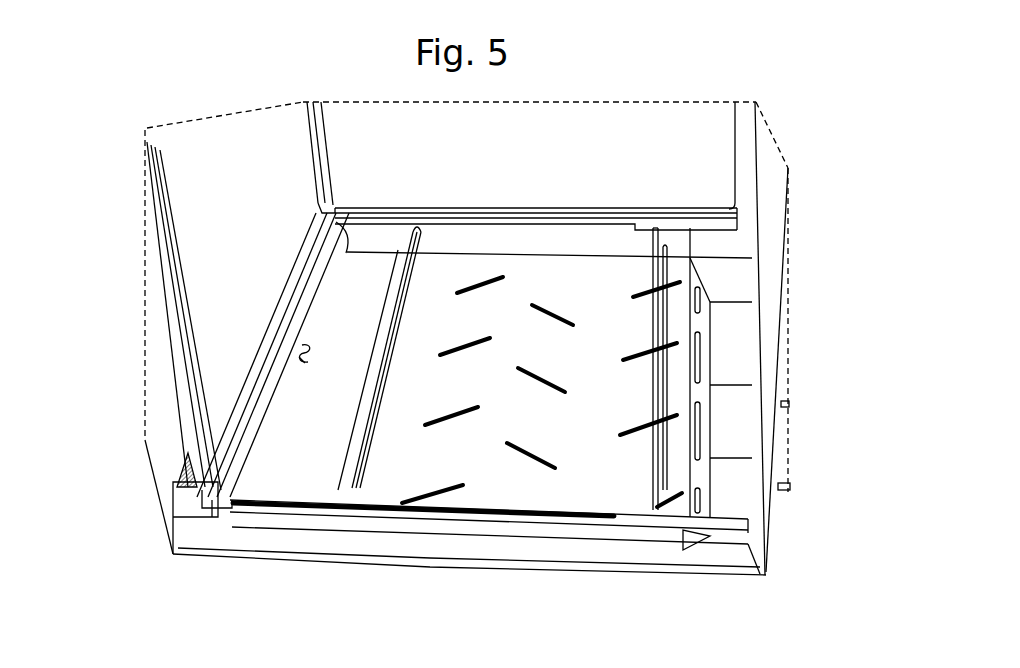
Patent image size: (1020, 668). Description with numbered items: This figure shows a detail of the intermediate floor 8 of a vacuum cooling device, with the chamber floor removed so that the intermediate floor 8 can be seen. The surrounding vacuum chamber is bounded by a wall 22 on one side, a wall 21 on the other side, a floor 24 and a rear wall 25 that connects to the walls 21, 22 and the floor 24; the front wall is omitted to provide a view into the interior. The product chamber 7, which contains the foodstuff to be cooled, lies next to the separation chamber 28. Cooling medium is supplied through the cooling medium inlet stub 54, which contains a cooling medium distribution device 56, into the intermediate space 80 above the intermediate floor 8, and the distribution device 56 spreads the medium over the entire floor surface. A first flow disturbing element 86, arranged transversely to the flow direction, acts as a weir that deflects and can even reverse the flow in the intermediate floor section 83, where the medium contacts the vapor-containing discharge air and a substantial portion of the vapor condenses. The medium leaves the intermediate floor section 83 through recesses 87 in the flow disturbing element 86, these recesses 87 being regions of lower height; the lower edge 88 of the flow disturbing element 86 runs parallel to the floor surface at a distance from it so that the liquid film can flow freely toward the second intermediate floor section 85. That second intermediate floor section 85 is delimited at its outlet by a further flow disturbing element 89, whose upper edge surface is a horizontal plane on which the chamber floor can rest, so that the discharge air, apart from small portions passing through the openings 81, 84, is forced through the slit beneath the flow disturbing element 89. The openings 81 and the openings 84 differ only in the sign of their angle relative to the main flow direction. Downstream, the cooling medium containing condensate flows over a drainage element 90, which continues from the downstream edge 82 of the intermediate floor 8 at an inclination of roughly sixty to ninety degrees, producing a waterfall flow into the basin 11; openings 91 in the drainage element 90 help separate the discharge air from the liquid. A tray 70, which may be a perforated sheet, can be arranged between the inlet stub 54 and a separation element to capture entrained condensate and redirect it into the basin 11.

The product chamber 7 is at (692, 168).
The intermediate floor 8 is at (390, 472).
The basin 11 is at (733, 472).
The wall 21 is at (767, 227).
The wall 22 is at (253, 257).
The floor 24 is at (630, 542).
The rear wall 25 is at (568, 160).
The separation chamber 28 is at (163, 428).
The cooling medium inlet stub 54 is at (303, 355).
The cooling medium distribution device 56 is at (302, 350).
The tray 70 is at (177, 482).
The intermediate space 80 is at (608, 245).
The openings 81 is at (533, 460).
The downstream edge 82 is at (690, 362).
The intermediate floor section 83 is at (358, 275).
The openings 84 is at (440, 420).
The second intermediate floor section 85 is at (523, 422).
The first flow disturbing element 86 is at (367, 418).
The recesses 87 is at (340, 462).
The lower edge 88 is at (417, 237).
The further flow disturbing element 89 is at (650, 443).
The drainage element 90 is at (708, 408).
The openings 91 is at (700, 342).